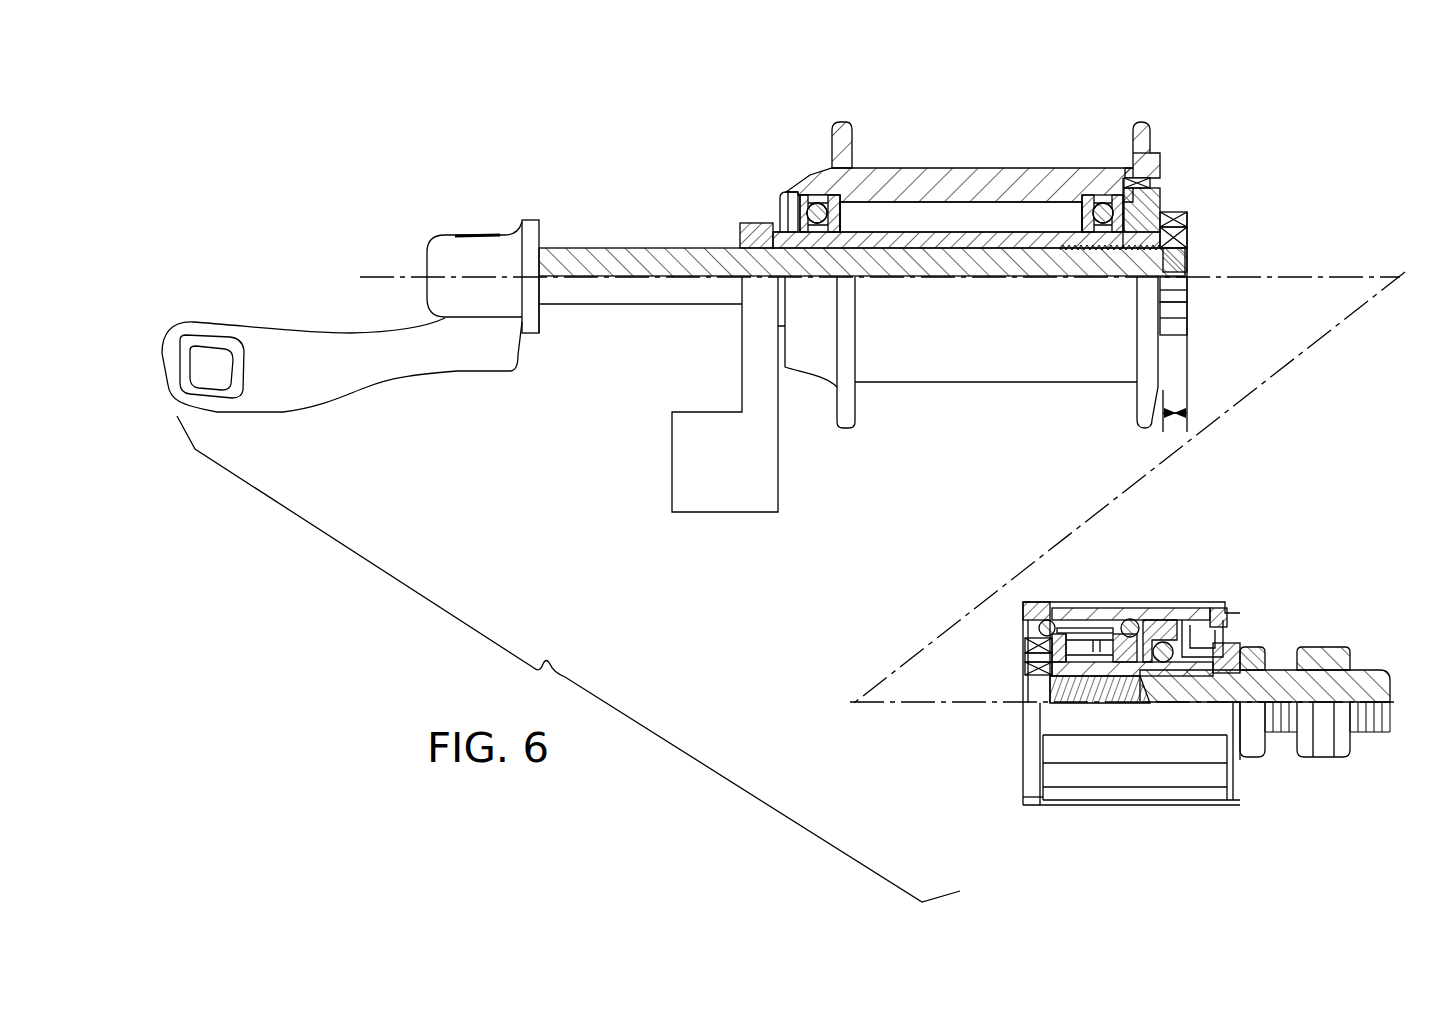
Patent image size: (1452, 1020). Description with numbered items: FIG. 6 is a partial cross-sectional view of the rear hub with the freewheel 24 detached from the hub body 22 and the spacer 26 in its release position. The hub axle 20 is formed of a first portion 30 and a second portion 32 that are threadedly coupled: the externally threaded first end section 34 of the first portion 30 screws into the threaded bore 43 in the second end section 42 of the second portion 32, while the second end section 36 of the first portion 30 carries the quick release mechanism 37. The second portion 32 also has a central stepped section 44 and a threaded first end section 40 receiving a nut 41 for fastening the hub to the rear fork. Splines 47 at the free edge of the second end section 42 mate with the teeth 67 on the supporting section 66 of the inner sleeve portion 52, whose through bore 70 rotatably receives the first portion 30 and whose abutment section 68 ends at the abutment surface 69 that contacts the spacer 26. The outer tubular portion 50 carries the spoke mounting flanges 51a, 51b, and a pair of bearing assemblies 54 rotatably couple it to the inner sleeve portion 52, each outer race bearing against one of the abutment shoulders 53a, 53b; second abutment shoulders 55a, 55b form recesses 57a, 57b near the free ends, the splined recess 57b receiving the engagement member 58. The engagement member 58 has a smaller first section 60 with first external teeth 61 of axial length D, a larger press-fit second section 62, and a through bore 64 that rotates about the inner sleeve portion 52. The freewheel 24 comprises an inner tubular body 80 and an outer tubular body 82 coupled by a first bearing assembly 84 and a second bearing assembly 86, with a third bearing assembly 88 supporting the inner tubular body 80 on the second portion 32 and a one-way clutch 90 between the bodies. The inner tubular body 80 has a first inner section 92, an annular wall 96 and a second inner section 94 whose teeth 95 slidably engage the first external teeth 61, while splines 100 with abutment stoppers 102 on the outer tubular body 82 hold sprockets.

The hub axle 20 is at (645, 320).
The hub body 22 is at (970, 402).
The freewheel 24 is at (1115, 812).
The spacer 26 is at (707, 530).
The first portion 30 is at (626, 248).
The second portion 32 is at (1279, 670).
The first end section 34 is at (1190, 264).
The second end section 36 is at (540, 245).
The quick release mechanism 37 is at (423, 240).
The first end section 40 is at (1283, 732).
The nut 41 is at (1331, 757).
The second end section 42 is at (1085, 690).
The threaded bore 43 is at (1047, 690).
The central stepped section 44 is at (1180, 674).
The splines 47 is at (1025, 666).
The outer tubular portion 50 is at (960, 168).
The spoke mounting flange 51a is at (838, 130).
The spoke mounting flange 51b is at (1152, 128).
The inner sleeve portion 52 is at (1010, 226).
The abutment shoulder 53a is at (820, 195).
The abutment shoulder 53b is at (1095, 196).
The bearing assemblies 54 is at (846, 207).
The second abutment shoulder 55a is at (778, 198).
The second abutment shoulder 55b is at (1165, 178).
The recess 57a is at (786, 210).
The recess 57b is at (1103, 273).
The engagement member 58 is at (1168, 202).
The first section 60 is at (1188, 290).
The first external teeth 61 is at (1190, 312).
The second section 62 is at (1162, 190).
The through bore 64 is at (1188, 247).
The supporting section 66 is at (905, 232).
The teeth 67 is at (1188, 232).
The abutment section 68 is at (738, 236).
The abutment surface 69 is at (755, 262).
The through bore 70 is at (945, 262).
The inner tubular body 80 is at (1097, 670).
The outer tubular body 82 is at (1125, 620).
The first bearing assembly 84 is at (1050, 612).
The second bearing assembly 86 is at (1175, 640).
The third bearing assembly 88 is at (1225, 655).
The one-way clutch 90 is at (1143, 686).
The first inner section 92 is at (1073, 650).
The second inner section 94 is at (1025, 640).
The teeth 95 is at (1025, 652).
The annular wall 96 is at (1058, 698).
The splines 100 is at (1228, 750).
The abutment stopper 102 is at (1043, 806).
The axial length D is at (1190, 392).